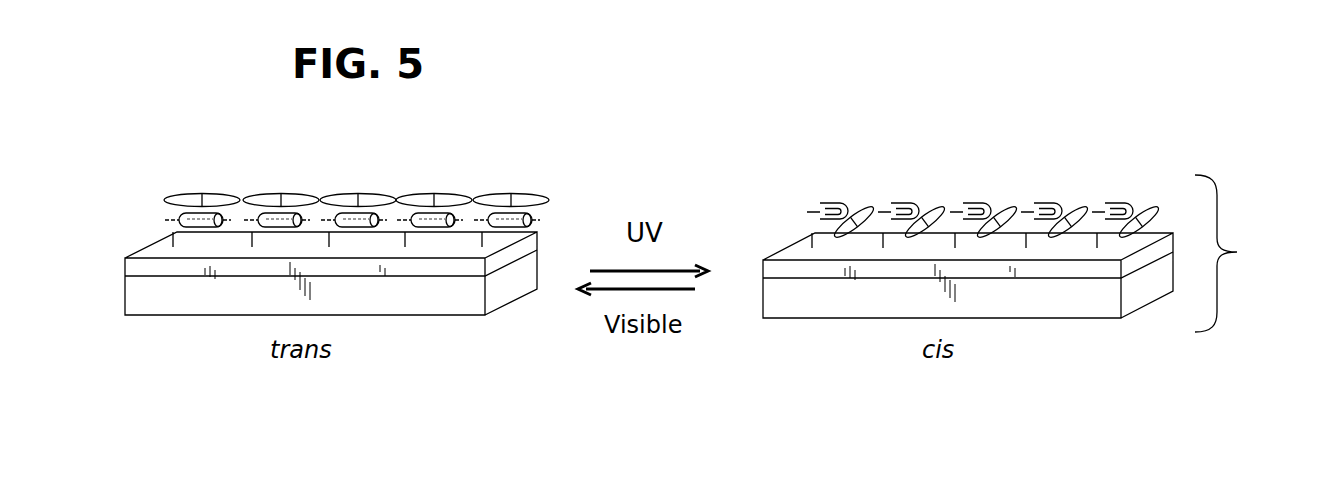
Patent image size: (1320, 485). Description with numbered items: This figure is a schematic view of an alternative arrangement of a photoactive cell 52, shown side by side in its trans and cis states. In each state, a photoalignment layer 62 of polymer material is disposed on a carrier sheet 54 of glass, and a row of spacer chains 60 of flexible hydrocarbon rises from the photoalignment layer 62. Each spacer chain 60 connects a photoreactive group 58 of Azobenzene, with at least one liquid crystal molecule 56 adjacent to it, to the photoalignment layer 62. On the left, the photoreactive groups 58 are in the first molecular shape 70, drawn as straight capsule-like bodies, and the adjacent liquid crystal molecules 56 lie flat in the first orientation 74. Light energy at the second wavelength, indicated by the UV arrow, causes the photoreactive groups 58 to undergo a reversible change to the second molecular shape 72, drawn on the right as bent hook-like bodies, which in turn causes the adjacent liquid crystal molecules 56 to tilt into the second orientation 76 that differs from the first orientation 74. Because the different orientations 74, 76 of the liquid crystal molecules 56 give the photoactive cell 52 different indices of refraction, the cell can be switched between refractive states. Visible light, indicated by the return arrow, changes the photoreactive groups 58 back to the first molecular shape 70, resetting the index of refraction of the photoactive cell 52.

The photoactive cell 52 is at (1229, 253).
The carrier sheet 54 is at (142, 298).
The liquid crystal molecule 56 is at (648, 181).
The photoreactive group 58 is at (666, 184).
The spacer chain 60 is at (172, 232).
The photoalignment layer 62 is at (125, 268).
The first molecular shape 70 is at (519, 216).
The second molecular shape 72 is at (1135, 208).
The first orientation 74 is at (357, 194).
The second orientation 76 is at (1005, 210).